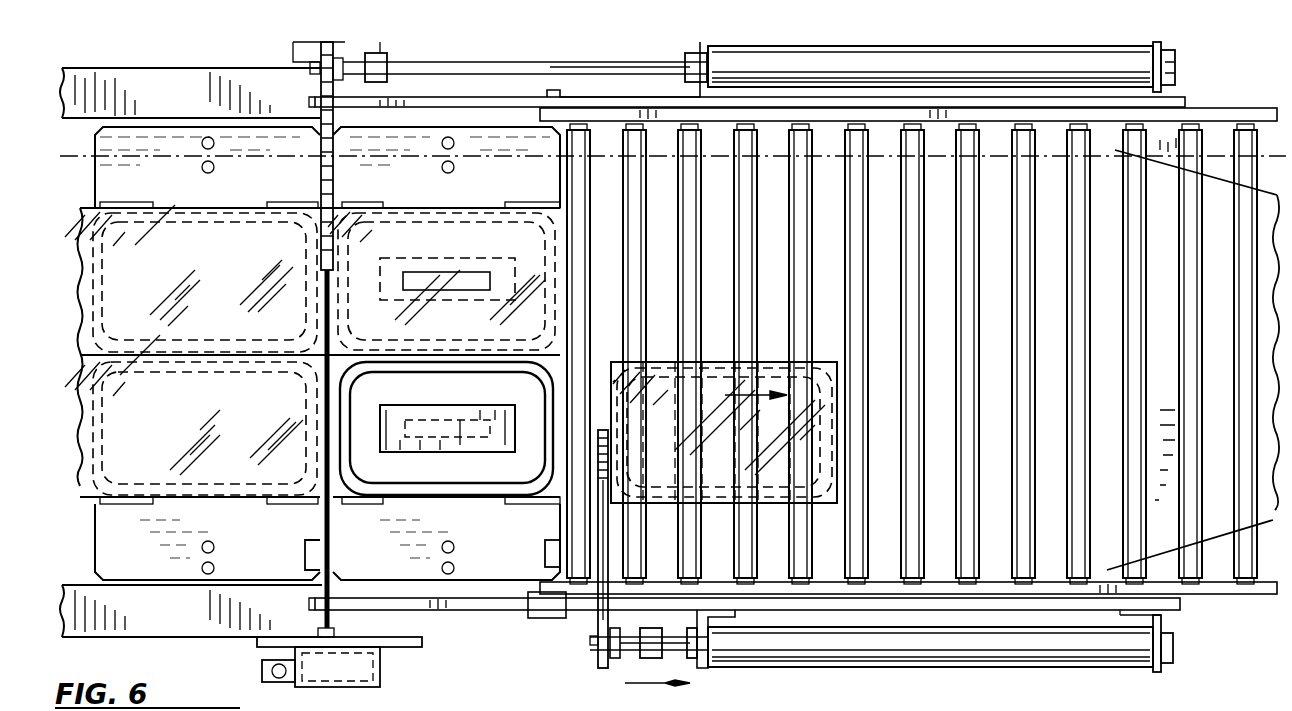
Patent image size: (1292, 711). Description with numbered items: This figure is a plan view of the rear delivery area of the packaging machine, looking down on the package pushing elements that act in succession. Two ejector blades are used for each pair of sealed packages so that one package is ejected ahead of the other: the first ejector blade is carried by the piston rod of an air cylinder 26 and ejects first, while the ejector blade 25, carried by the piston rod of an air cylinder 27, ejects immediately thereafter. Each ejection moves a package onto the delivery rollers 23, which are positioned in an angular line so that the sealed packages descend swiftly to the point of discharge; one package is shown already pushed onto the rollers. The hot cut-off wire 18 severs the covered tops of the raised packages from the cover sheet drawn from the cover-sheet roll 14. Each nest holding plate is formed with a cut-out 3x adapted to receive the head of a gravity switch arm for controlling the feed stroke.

The cover-sheet roll 14 is at (598, 637).
The hot cut-off wire 18 is at (333, 614).
The delivery rollers 23 is at (620, 243).
The ejector blade 25 is at (318, 177).
The air cylinder 26 is at (1035, 665).
The air cylinder 27 is at (759, 69).
The cut-out 3x is at (305, 551).